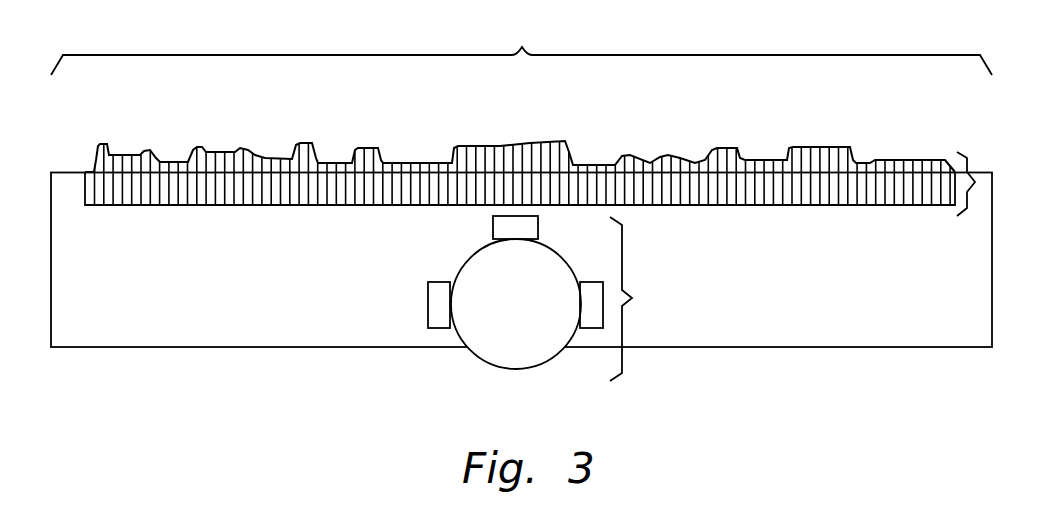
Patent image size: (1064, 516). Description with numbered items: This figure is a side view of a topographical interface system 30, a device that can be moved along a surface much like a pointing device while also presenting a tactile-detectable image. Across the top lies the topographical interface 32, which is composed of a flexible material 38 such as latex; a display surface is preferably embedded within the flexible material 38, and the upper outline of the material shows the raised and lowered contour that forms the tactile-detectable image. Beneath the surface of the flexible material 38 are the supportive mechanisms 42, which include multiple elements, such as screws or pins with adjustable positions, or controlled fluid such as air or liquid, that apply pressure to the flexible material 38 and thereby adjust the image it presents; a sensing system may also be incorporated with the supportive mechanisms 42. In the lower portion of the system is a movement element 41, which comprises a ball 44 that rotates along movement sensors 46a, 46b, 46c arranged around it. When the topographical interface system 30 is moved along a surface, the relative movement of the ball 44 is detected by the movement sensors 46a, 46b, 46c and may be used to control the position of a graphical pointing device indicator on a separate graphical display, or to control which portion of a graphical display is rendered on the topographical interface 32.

The topographical interface system 30 is at (521, 45).
The topographical interface 32 is at (578, 122).
The flexible material 38 is at (911, 160).
The movement element 41 is at (638, 299).
The supportive mechanisms 42 is at (984, 182).
The ball 44 is at (531, 318).
The movement sensor 46a is at (428, 312).
The movement sensor 46b is at (493, 226).
The movement sensor 46c is at (590, 328).